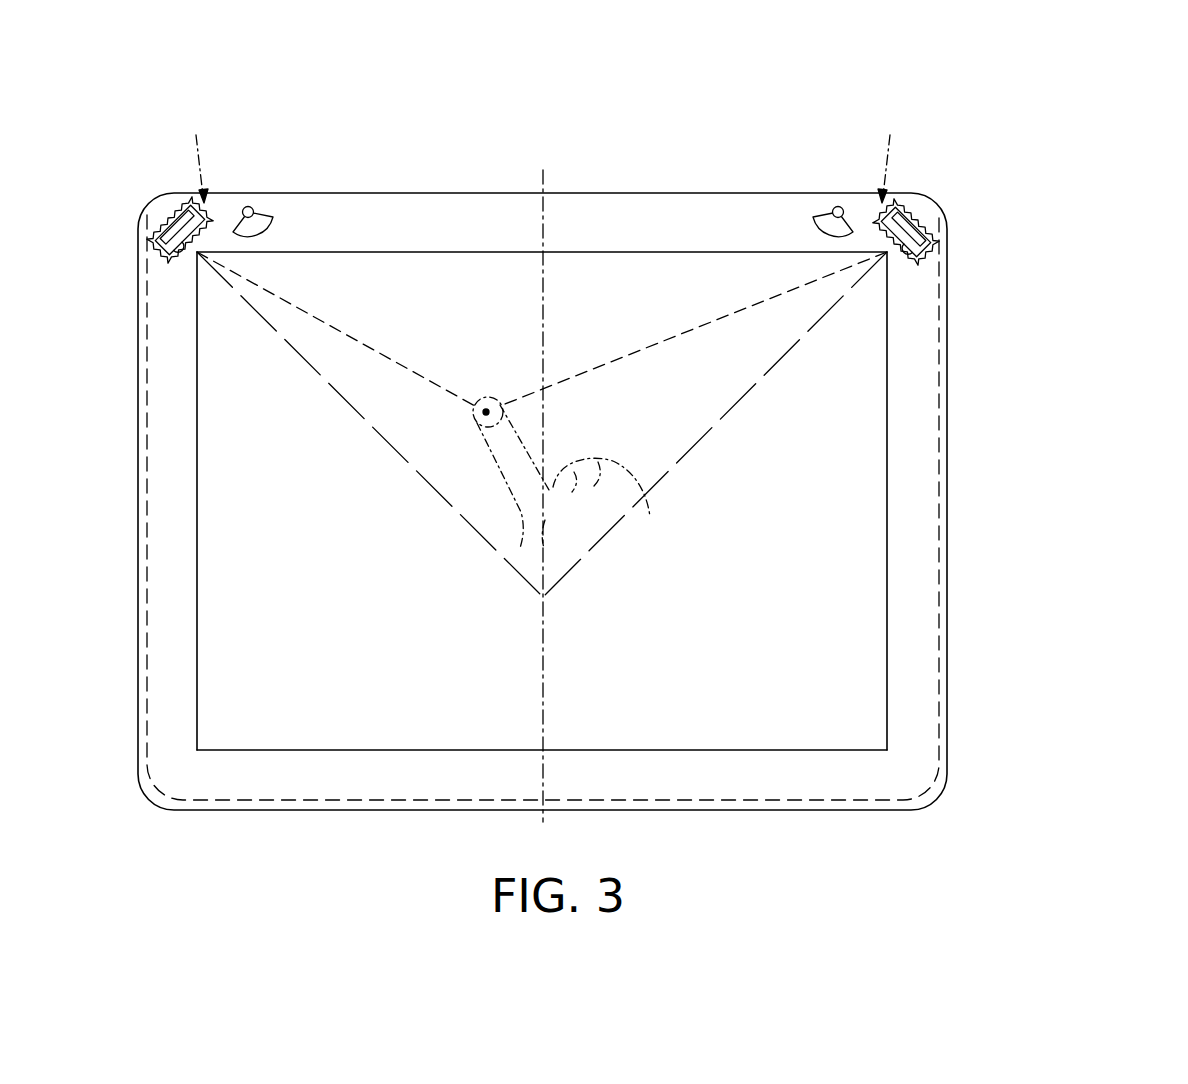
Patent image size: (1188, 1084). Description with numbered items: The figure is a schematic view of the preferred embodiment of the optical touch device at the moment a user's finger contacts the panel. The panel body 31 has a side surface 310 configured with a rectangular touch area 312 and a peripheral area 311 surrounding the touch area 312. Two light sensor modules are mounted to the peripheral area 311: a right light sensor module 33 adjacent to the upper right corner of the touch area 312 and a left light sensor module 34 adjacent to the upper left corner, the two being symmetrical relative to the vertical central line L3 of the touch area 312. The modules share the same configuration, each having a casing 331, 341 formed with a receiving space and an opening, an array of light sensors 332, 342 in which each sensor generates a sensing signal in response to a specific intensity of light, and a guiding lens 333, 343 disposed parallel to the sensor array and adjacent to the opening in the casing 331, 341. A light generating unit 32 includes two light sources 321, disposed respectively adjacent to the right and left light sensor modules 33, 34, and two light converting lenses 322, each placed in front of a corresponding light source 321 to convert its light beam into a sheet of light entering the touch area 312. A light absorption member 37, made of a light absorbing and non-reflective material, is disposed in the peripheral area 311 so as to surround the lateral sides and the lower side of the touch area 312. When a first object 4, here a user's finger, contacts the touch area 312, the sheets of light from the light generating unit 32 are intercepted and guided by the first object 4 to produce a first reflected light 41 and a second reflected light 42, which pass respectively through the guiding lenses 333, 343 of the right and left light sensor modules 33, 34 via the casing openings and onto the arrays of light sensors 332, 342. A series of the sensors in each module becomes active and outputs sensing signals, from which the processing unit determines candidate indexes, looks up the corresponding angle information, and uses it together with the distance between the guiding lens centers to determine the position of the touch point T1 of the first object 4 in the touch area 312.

The panel body 31 is at (946, 491).
The light absorption member 37 is at (947, 597).
The side surface 310 is at (676, 506).
The peripheral area 311 is at (908, 664).
The touch area 312 is at (840, 713).
The light generating unit 32 is at (543, 142).
The light source 321 is at (248, 207).
The light converting lens 322 is at (275, 232).
The right light sensor module 33 is at (951, 210).
The casing 331 is at (905, 231).
The array of light sensors 332 is at (909, 229).
The guiding lens 333 is at (906, 250).
The left light sensor module 34 is at (133, 210).
The casing 341 is at (179, 229).
The array of light sensors 342 is at (177, 227).
The guiding lens 343 is at (180, 248).
The first object 4 is at (518, 428).
The first reflected light 41 is at (753, 303).
The second reflected light 42 is at (320, 318).
The touch point T1 is at (486, 410).
The vertical central line L3 is at (543, 320).